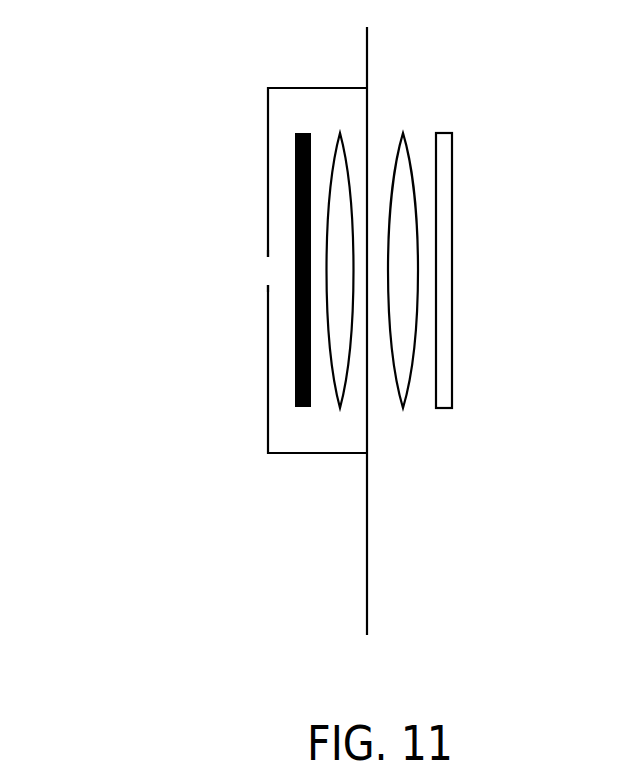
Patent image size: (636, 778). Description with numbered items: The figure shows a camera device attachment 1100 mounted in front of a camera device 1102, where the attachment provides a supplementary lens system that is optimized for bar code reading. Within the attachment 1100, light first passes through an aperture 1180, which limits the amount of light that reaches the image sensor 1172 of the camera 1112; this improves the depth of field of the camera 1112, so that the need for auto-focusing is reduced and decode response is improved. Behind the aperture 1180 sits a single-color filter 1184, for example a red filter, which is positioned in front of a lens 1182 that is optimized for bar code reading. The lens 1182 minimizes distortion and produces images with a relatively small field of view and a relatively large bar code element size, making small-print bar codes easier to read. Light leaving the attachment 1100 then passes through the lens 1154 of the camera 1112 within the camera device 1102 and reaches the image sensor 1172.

The camera device 1102 is at (366, 612).
The camera device attachment 1100 is at (268, 425).
The aperture 1180 is at (267, 270).
The single-color filter 1184 is at (303, 407).
The lens 1182 is at (340, 133).
The lens 1154 is at (403, 408).
The image sensor 1172 is at (442, 133).
The camera 1112 is at (494, 130).